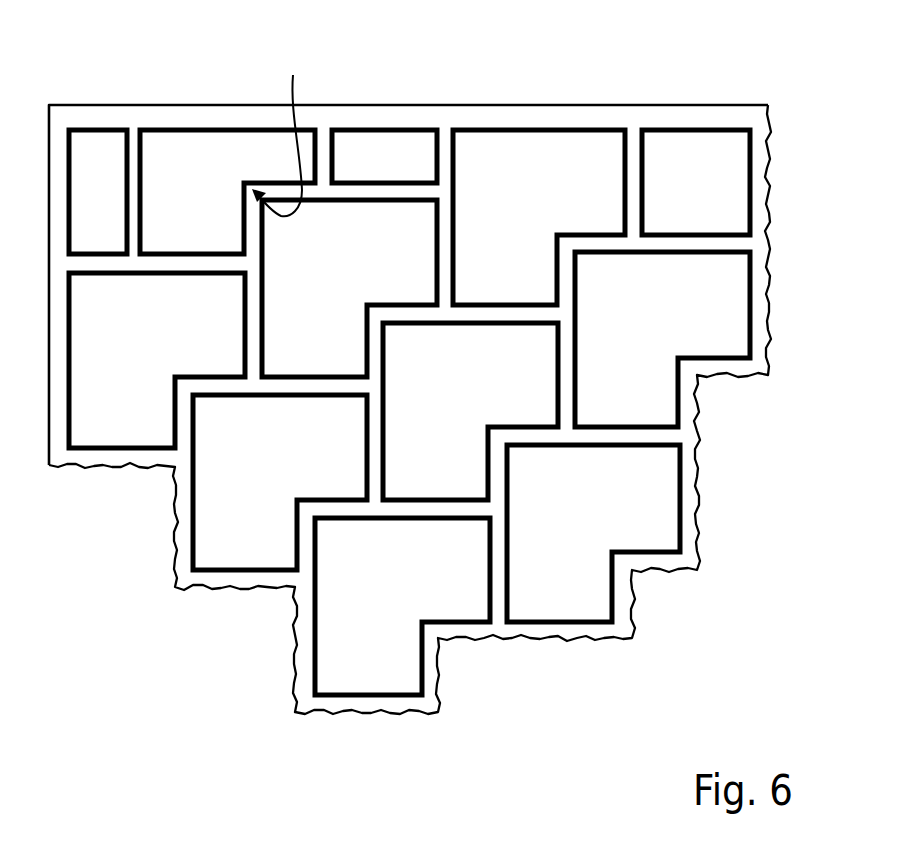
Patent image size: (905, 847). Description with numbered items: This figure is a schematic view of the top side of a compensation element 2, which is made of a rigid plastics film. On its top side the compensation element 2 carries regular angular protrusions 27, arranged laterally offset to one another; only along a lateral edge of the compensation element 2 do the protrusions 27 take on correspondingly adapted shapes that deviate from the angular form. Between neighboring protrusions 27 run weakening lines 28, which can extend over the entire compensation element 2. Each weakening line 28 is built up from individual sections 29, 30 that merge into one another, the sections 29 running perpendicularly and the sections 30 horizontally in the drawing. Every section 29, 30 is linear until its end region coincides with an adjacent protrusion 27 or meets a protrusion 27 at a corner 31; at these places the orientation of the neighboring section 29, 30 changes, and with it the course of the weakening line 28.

The compensation element 2 is at (662, 117).
The angular protrusions 27 is at (376, 227).
The weakening lines 28 is at (298, 388).
The section of weakening line 29 is at (407, 510).
The section of weakening line 30 is at (635, 175).
The corner 31 is at (382, 321).